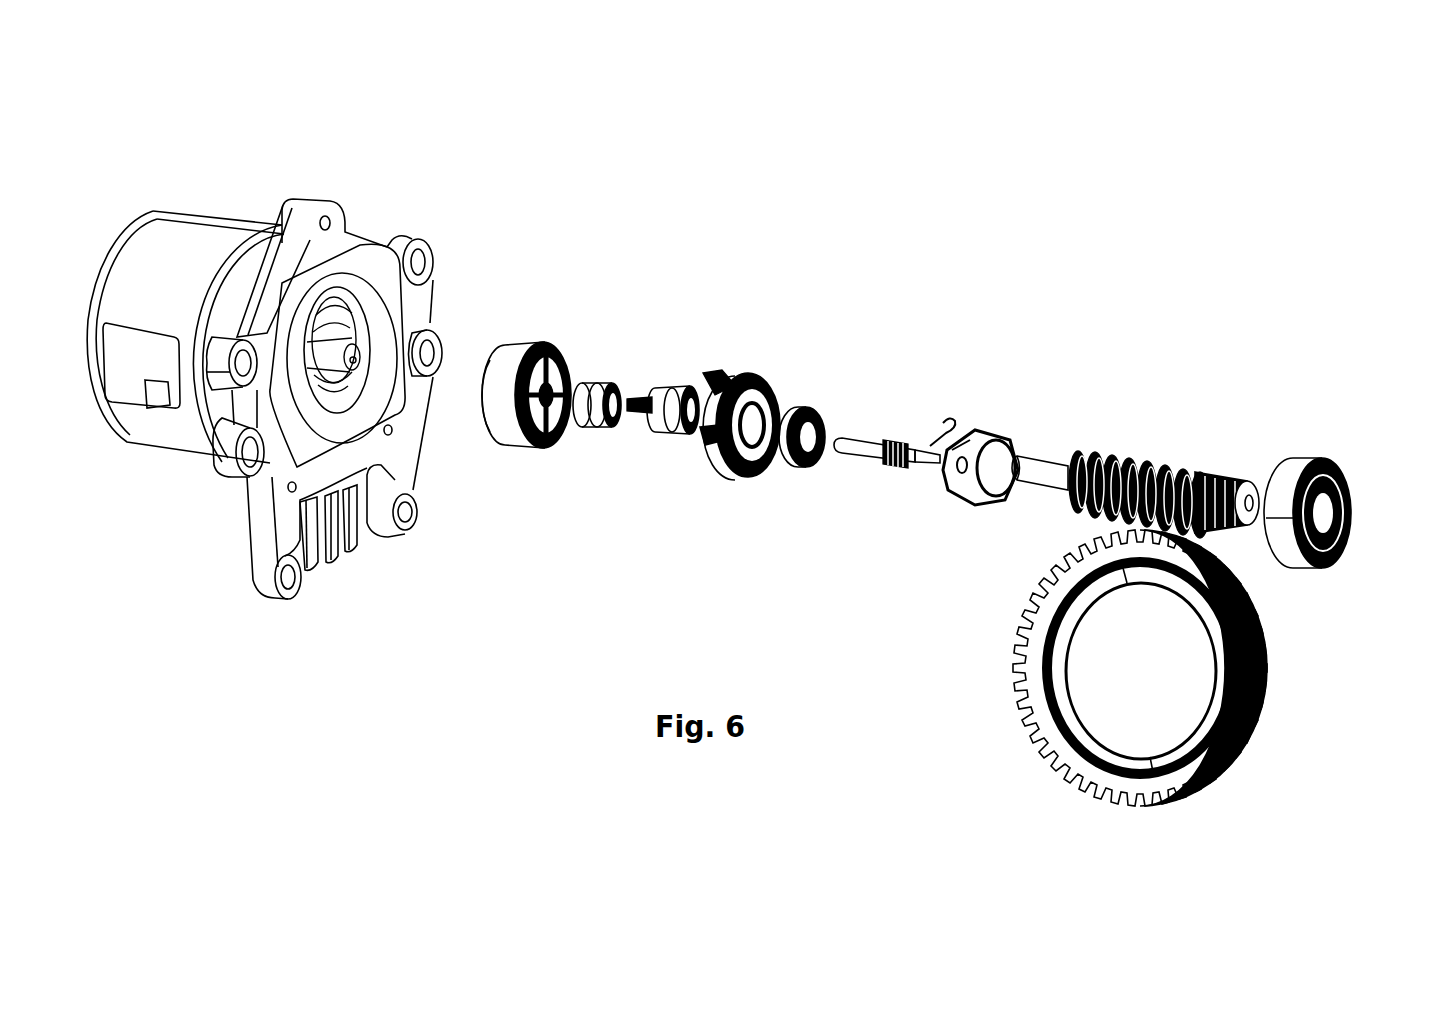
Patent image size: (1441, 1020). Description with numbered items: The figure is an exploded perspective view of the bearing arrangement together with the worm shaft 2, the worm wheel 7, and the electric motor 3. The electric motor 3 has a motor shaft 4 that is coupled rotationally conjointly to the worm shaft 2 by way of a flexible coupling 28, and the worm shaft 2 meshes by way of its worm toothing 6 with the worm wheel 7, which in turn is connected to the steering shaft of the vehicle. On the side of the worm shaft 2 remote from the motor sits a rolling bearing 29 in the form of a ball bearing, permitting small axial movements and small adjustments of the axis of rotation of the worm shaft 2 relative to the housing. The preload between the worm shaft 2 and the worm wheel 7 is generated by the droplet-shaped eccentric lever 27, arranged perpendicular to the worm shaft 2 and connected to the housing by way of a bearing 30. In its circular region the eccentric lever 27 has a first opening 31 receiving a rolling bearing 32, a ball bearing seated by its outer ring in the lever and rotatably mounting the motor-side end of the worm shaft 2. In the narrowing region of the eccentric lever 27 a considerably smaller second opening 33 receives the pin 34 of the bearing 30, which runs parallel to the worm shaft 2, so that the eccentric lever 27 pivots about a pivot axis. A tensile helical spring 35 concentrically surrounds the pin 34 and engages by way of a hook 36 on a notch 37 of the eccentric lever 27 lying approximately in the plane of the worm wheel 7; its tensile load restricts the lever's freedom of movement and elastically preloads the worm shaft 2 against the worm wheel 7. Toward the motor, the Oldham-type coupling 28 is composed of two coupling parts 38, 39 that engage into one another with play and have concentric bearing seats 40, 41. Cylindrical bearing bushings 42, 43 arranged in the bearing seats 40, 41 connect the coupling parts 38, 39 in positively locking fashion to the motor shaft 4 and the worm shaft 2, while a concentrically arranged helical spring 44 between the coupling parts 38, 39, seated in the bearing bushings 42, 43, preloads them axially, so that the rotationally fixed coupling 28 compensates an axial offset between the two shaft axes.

The worm shaft 2 is at (1117, 457).
The electric motor 3 is at (222, 208).
The motor shaft 4 is at (348, 302).
The worm toothing 6 is at (1198, 457).
The worm wheel 7 is at (1267, 703).
The eccentric lever 27 is at (1012, 445).
The flexible coupling 28 is at (633, 365).
The rolling bearing 29 is at (1337, 462).
The bearing 30 is at (918, 472).
The first opening 31 is at (1018, 447).
The rolling bearing 32 is at (807, 407).
The second opening 33 is at (972, 440).
The pin 34 is at (852, 447).
The helical spring 35 is at (897, 437).
The hook 36 is at (935, 432).
The notch 37 is at (1002, 435).
The coupling part 38 is at (542, 343).
The coupling part 39 is at (760, 388).
The bearing seat 40 is at (567, 353).
The bearing seat 41 is at (716, 382).
The bearing bushing 42 is at (597, 428).
The bearing bushing 43 is at (660, 435).
The helical spring 44 is at (628, 423).